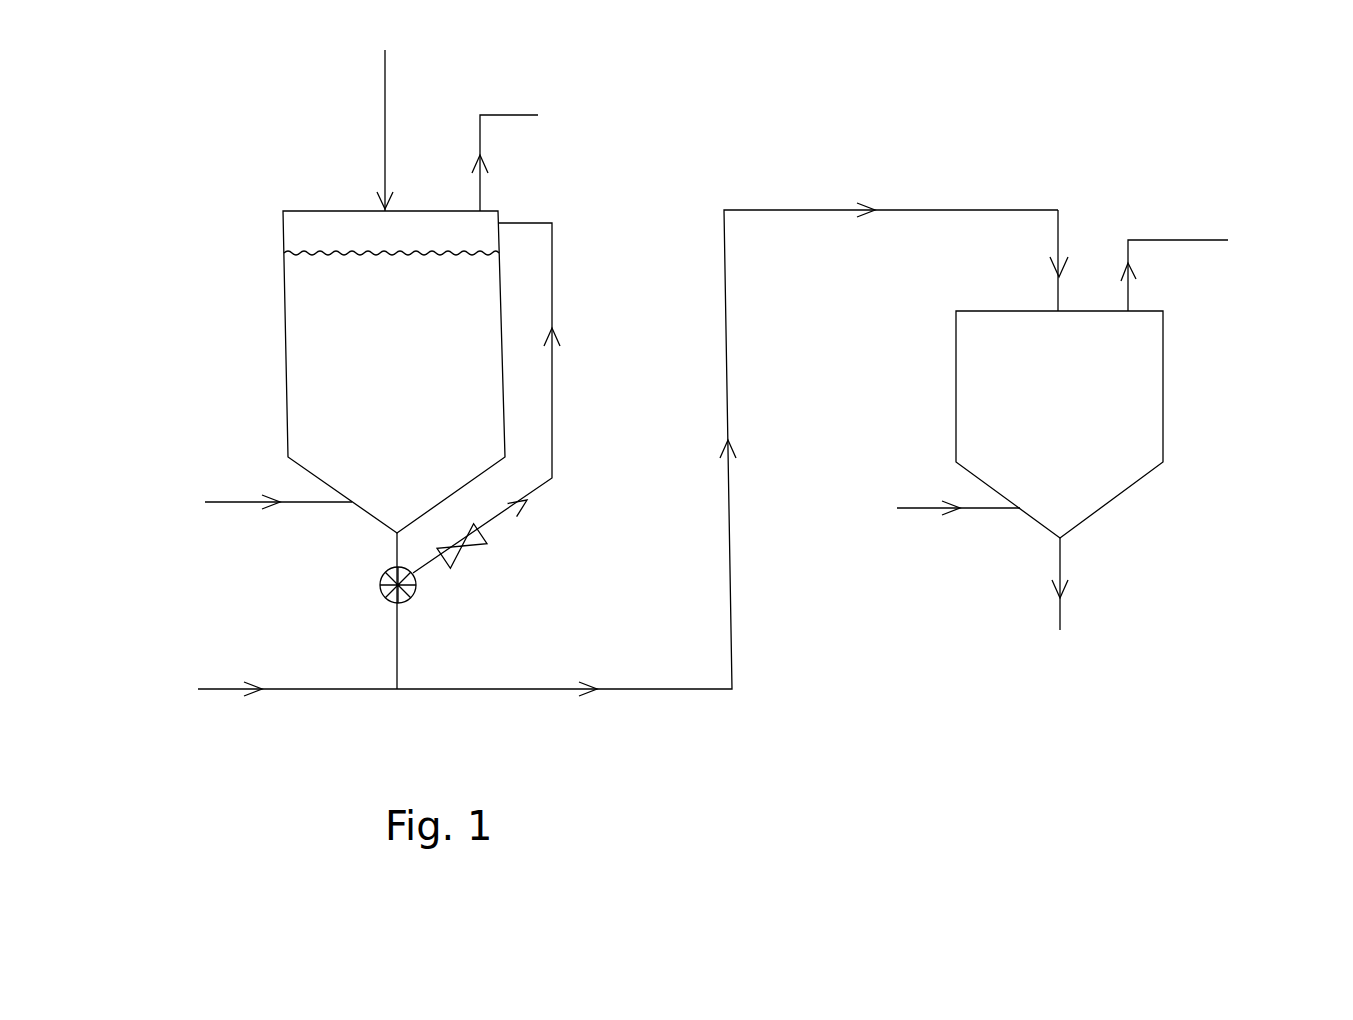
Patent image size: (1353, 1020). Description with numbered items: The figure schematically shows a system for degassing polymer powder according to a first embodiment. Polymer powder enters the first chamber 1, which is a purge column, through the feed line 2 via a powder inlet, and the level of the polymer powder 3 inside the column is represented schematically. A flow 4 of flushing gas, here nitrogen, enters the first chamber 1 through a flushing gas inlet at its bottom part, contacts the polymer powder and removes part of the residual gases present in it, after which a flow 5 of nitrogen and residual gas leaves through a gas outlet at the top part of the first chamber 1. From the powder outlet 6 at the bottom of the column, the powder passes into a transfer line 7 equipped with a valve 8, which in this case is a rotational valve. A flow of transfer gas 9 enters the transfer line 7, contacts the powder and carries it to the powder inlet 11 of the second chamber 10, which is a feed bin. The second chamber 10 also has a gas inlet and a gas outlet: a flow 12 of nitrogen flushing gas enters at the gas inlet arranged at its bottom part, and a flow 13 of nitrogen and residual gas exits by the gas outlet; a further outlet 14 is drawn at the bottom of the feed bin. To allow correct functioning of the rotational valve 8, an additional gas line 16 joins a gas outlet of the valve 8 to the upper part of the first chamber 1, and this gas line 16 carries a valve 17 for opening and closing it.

The first chamber 1 is at (286, 302).
The feed line 2 is at (385, 120).
The level of the polymer powder 3 is at (293, 252).
The flow of flushing gas 4 is at (242, 505).
The flow of nitrogen and residual gas 5 is at (512, 114).
The powder outlet 6 is at (395, 538).
The transfer line 7 is at (720, 691).
The valve 8 is at (380, 596).
The flow of transfer gas 9 is at (237, 692).
The second chamber 10 is at (1168, 393).
The powder inlet 11 is at (1062, 310).
The flow of flushing gas 12 is at (925, 510).
The flow of nitrogen and residual gas 13 is at (1200, 240).
The bottom product outlet 14 is at (1060, 538).
The gas line 16 is at (552, 440).
The valve 17 is at (475, 548).